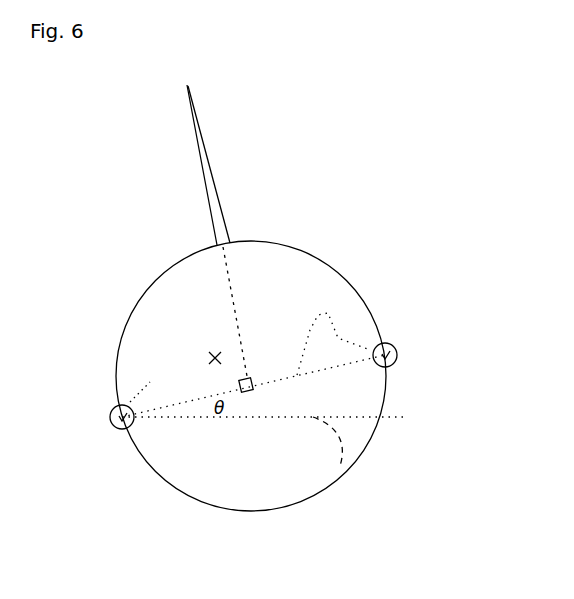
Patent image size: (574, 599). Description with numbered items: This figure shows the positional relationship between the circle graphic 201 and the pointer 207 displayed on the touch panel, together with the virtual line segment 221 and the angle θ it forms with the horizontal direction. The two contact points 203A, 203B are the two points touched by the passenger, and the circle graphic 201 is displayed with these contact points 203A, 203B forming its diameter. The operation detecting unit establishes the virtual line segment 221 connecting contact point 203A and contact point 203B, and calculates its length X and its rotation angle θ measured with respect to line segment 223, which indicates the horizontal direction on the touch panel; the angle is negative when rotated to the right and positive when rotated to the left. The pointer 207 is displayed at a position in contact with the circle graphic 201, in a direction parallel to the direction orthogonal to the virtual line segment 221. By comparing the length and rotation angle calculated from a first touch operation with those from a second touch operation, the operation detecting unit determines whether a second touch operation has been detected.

The circle graphic 201 is at (297, 507).
The pointer 207 is at (210, 167).
The contact point 203A is at (112, 427).
The contact point 203B is at (397, 360).
The virtual line segment 221 is at (338, 320).
The line segment 223 is at (340, 468).